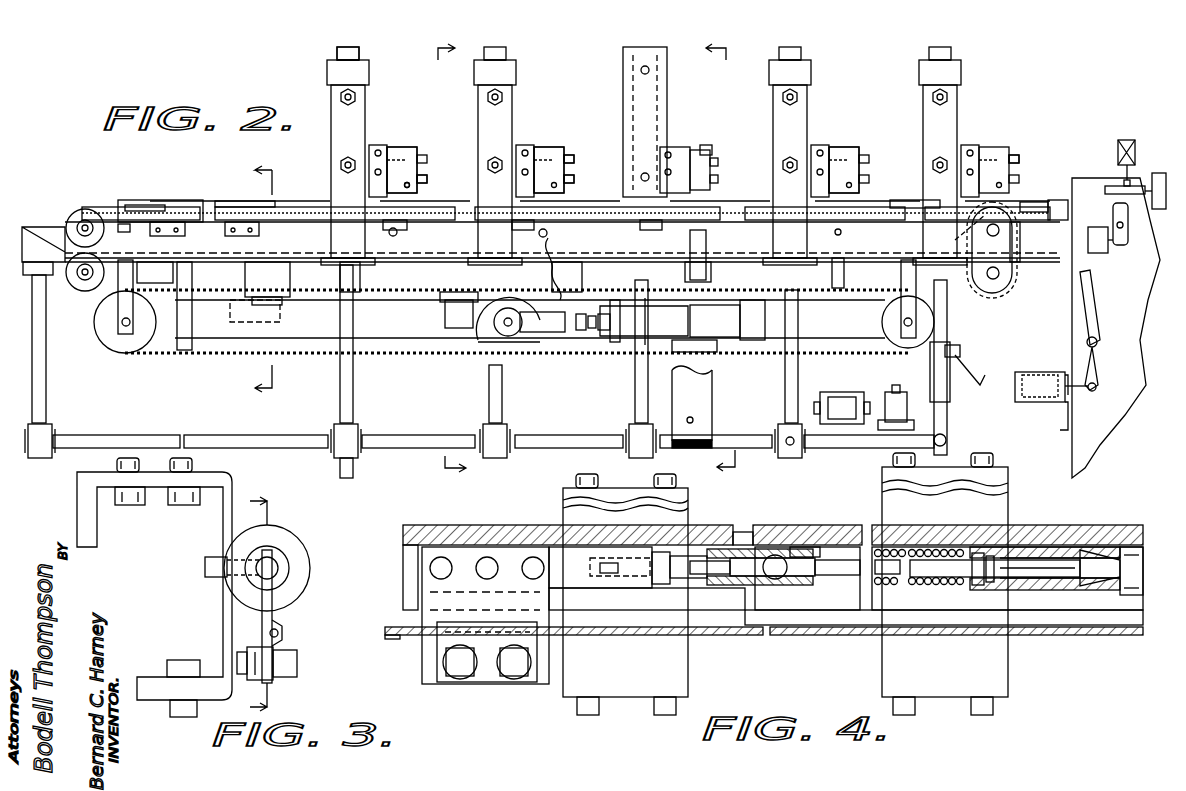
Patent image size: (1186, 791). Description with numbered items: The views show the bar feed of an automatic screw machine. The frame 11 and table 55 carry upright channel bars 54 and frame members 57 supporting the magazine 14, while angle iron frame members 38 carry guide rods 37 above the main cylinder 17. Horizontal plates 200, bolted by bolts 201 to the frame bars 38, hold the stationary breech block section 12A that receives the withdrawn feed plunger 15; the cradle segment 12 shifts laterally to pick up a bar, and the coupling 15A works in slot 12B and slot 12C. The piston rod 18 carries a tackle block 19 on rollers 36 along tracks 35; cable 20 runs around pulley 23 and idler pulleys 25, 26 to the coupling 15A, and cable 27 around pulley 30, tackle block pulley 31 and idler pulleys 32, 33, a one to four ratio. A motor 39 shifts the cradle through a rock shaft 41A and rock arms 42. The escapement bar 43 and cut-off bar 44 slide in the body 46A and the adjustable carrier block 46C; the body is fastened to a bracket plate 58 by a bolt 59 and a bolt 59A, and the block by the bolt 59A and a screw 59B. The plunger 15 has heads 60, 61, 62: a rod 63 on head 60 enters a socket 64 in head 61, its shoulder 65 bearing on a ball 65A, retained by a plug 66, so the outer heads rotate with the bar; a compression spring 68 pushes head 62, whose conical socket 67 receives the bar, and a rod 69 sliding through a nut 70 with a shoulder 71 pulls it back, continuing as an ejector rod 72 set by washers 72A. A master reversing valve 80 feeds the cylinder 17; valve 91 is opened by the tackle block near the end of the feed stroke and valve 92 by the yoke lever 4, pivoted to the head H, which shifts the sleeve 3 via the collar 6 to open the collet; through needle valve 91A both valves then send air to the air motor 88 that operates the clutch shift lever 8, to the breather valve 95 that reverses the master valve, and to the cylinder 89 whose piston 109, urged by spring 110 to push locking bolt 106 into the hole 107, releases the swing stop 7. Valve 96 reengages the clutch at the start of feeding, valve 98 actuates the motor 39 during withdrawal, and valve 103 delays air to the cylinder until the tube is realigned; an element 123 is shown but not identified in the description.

In FIG. 2, the sleeve 3 is at (273, 275).
In FIG. 2, the yoke lever 4 is at (1112, 210).
In FIG. 3, the yoke lever 4 is at (252, 606).
In FIG. 2, the collar 6 is at (443, 257).
In FIG. 2, the swing stop 7 is at (728, 256).
In FIG. 2, the shift lever 8 is at (1090, 315).
In FIG. 2, the head H is at (1072, 303).
In FIG. 2, the frame 11 is at (34, 380).
In FIG. 2, the cradle segment 12 is at (575, 222).
In FIG. 2, the breech block section 12A is at (190, 198).
In FIG. 3, the breech block section 12A is at (292, 538).
In FIG. 4, the breech block section 12A is at (515, 510).
In FIG. 2, the slot 12B is at (1050, 222).
In FIG. 3, the slot 12C is at (282, 616).
In FIG. 4, the slot 12C is at (822, 610).
In FIG. 2, the magazine 14 is at (378, 102).
In FIG. 4, the feed plunger 15 is at (800, 547).
In FIG. 2, the coupling 15A is at (132, 203).
In FIG. 3, the coupling 15A is at (292, 678).
In FIG. 4, the coupling 15A is at (487, 661).
In FIG. 2, the main cylinder 17 is at (682, 321).
In FIG. 2, the piston rod 18 is at (596, 340).
In FIG. 2, the tackle block 19 is at (585, 345).
In FIG. 2, the cable 20 is at (960, 295).
In FIG. 4, the cable 20 is at (762, 636).
In FIG. 2, the pulley 23 is at (884, 326).
In FIG. 2, the idler pulley 25 is at (995, 250).
In FIG. 2, the idler pulley 26 is at (1015, 240).
In FIG. 2, the cable 27 is at (905, 200).
In FIG. 4, the cable 27 is at (392, 640).
In FIG. 2, the pulley 30 is at (98, 325).
In FIG. 2, the tackle block pulley 31 is at (520, 316).
In FIG. 2, the idler pulley 32 is at (72, 285).
In FIG. 2, the idler pulley 33 is at (80, 212).
In FIG. 2, the tracks 35 is at (560, 335).
In FIG. 2, the rollers 36 is at (515, 335).
In FIG. 2, the transverse guide rods 37 is at (410, 238).
In FIG. 2, the angle iron frame members 38 is at (256, 225).
In FIG. 2, the cylinder and piston motor 39 is at (705, 362).
In FIG. 2, the rock shaft 41A is at (565, 269).
In FIG. 2, the rock arms 42 is at (835, 265).
In FIG. 2, the escapement bar 43 is at (420, 190).
In FIG. 2, the cut-off bar 44 is at (420, 180).
In FIG. 2, the upright body 46A is at (545, 148).
In FIG. 2, the carrier block 46C is at (422, 160).
In FIG. 2, the upright channel bars 54 is at (362, 125).
In FIG. 2, the table 55 is at (155, 272).
In FIG. 2, the upright frame members 57 is at (366, 74).
In FIG. 2, the angular bracket plate 58 is at (395, 145).
In FIG. 2, the bolt 59 is at (705, 140).
In FIG. 2, the bolt 59A is at (576, 179).
In FIG. 2, the screw 59B is at (576, 159).
In FIG. 4, the head 60 is at (609, 567).
In FIG. 4, the intermediate head 61 is at (825, 590).
In FIG. 4, the outer head 62 is at (1088, 548).
In FIG. 4, the axial rod 63 is at (690, 590).
In FIG. 4, the socket 64 is at (730, 590).
In FIG. 4, the shoulder 65 is at (772, 582).
In FIG. 4, the ball 65A is at (775, 555).
In FIG. 4, the plug 66 is at (730, 528).
In FIG. 4, the conical socket 67 is at (1140, 545).
In FIG. 4, the compression spring 68 is at (936, 581).
In FIG. 4, the axial rod 69 is at (1007, 579).
In FIG. 4, the nut 70 is at (940, 552).
In FIG. 4, the shoulder 71 is at (985, 552).
In FIG. 4, the ejector rod 72 is at (1060, 580).
In FIG. 4, the spacers 72A is at (1045, 579).
In FIG. 2, the master reversing valve 80 is at (842, 398).
In FIG. 2, the air motor 88 is at (1048, 370).
In FIG. 2, the cylinder 89 is at (1136, 150).
In FIG. 2, the valve 91 is at (245, 280).
In FIG. 2, the needle valve 91A is at (268, 309).
In FIG. 2, the valve 92 is at (1098, 252).
In FIG. 2, the breather valve 95 is at (896, 396).
In FIG. 2, the valve 96 is at (440, 298).
In FIG. 2, the valve 98 is at (529, 234).
In FIG. 2, the valve 103 is at (672, 246).
In FIG. 2, the locking bolt 106 is at (1122, 173).
In FIG. 2, the hole 107 is at (1118, 192).
In FIG. 2, the piston 109 is at (1118, 155).
In FIG. 2, the spring 110 is at (1124, 142).
In FIG. 2, the switch 123 is at (960, 368).
In FIG. 2, the horizontal plates 200 is at (225, 234).
In FIG. 3, the horizontal plates 200 is at (222, 530).
In FIG. 4, the horizontal plates 200 is at (785, 582).
In FIG. 3, the bolts 201 is at (137, 505).
In FIG. 4, the bolts 201 is at (652, 482).